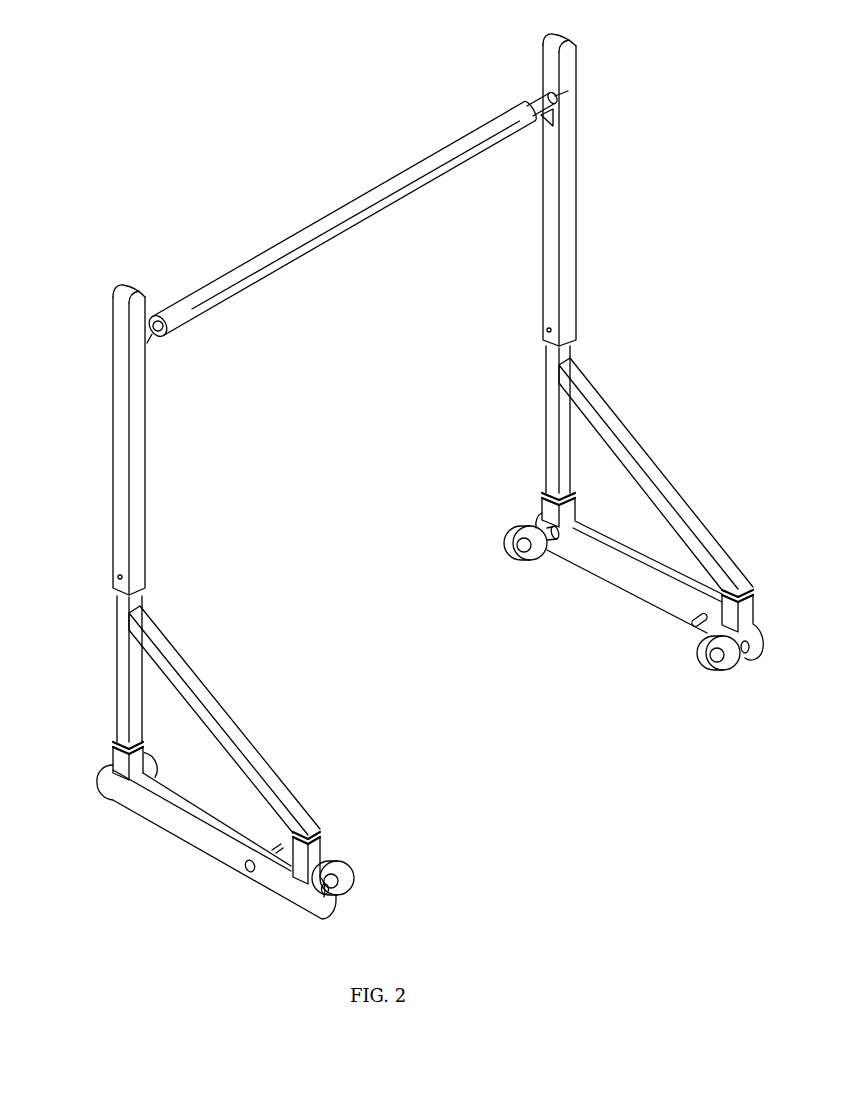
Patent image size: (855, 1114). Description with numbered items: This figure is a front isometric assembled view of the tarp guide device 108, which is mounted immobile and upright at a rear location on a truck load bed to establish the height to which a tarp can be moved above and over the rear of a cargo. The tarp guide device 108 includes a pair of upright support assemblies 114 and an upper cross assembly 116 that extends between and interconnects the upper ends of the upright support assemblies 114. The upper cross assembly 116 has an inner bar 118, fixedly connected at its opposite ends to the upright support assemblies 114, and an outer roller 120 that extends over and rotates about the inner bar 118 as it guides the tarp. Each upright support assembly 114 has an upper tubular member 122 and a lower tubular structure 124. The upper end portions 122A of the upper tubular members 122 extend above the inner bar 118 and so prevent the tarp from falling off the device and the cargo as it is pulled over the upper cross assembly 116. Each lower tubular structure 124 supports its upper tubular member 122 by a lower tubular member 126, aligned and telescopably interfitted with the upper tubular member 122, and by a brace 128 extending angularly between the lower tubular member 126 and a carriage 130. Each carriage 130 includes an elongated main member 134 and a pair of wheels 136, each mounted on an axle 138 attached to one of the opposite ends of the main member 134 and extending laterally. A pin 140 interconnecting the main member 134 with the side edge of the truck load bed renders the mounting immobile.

The tarp guide device 108 is at (185, 150).
The upright support assemblies 114 is at (607, 207).
The upper cross assembly 116 is at (352, 198).
The inner bar 118 is at (529, 101).
The outer roller 120 is at (227, 273).
The upper tubular member 122 is at (543, 250).
The upper end portion 122A is at (577, 61).
The lower tubular structure 124 is at (535, 435).
The lower tubular member 126 is at (546, 378).
The brace 128 is at (640, 455).
The carriage 130 is at (618, 619).
The elongated main member 134 is at (700, 636).
The wheels 136 is at (512, 562).
The axles 138 is at (550, 530).
The pin 140 is at (690, 620).